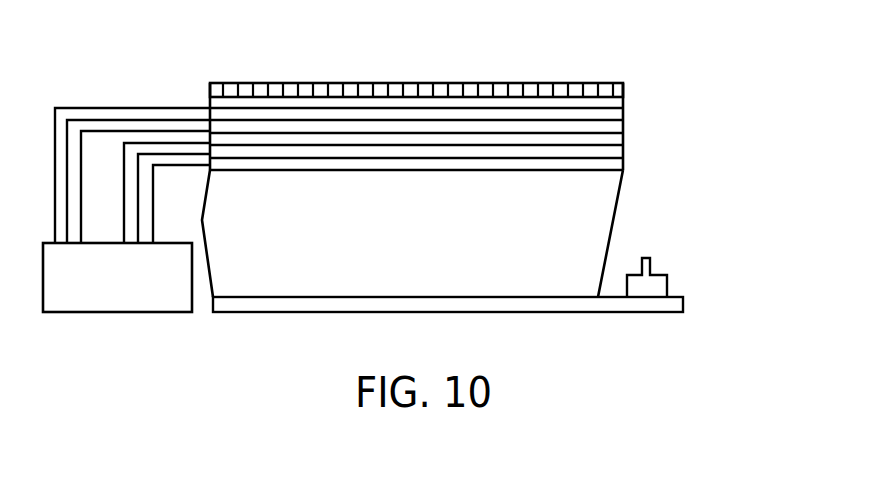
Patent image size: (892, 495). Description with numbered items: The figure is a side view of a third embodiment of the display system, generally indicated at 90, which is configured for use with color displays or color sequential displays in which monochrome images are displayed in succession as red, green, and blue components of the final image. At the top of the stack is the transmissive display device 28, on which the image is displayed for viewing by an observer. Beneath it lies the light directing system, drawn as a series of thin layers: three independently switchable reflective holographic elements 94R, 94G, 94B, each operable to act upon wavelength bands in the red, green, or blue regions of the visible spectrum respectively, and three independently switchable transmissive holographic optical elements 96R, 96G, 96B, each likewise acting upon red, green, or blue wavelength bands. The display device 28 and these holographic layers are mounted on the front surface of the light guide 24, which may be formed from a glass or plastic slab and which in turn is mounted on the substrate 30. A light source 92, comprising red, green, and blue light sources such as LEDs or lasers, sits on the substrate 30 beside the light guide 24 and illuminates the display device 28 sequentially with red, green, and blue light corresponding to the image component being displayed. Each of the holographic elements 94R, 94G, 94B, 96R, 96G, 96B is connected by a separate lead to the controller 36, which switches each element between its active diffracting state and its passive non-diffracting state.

The third embodiment display system 90 is at (482, 50).
The display device 28 is at (233, 82).
The red reflective holographic element 94R is at (624, 101).
The green reflective holographic element 94G is at (624, 111).
The blue reflective holographic element 94B is at (624, 127).
The red transmissive holographic optical element 96R is at (624, 140).
The green transmissive holographic optical element 96G is at (624, 150).
The blue transmissive holographic optical element 96B is at (624, 163).
The light guide 24 is at (265, 283).
The substrate 30 is at (682, 312).
The light source 92 is at (657, 267).
The controller 36 is at (120, 311).